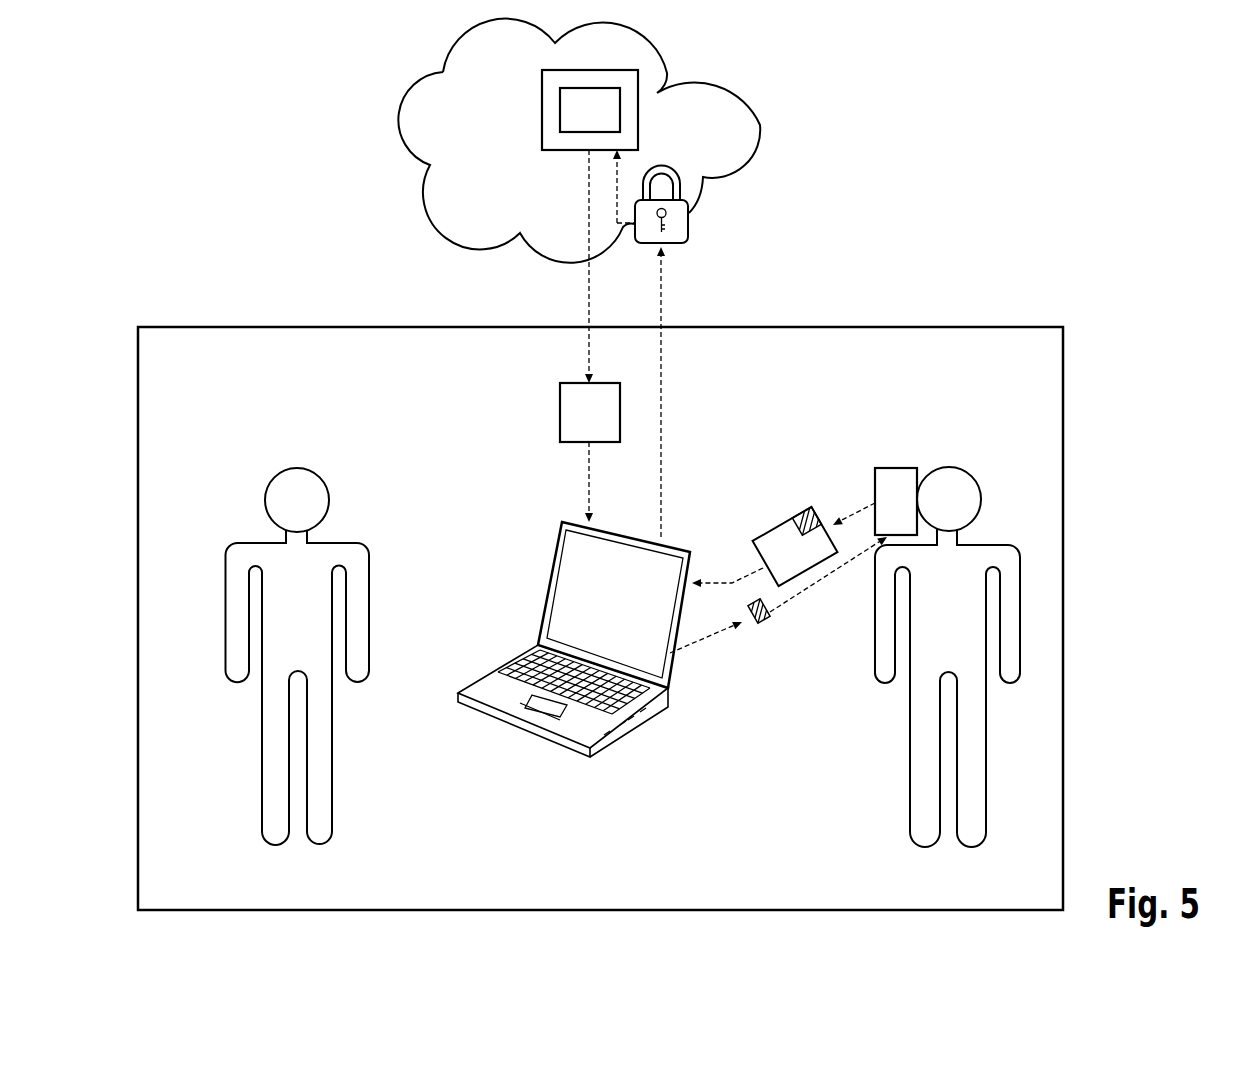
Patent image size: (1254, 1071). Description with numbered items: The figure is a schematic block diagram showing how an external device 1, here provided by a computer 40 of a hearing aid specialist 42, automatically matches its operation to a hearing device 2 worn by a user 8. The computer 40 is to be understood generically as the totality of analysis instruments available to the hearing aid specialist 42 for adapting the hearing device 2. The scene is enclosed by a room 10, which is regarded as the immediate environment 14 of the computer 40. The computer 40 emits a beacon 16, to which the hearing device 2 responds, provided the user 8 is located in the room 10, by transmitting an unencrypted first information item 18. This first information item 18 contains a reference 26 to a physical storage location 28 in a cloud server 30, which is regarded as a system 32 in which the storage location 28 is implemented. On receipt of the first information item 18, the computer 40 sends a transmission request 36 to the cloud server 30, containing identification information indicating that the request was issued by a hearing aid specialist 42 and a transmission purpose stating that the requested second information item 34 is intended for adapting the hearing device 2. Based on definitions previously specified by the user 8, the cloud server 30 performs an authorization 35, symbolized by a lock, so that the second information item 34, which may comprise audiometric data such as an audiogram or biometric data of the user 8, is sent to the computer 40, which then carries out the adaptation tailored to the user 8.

The external device 1 is at (574, 639).
The hearing device 2 is at (894, 468).
The user 8 is at (948, 467).
The room 10 is at (642, 618).
The immediate environment 14 is at (1015, 382).
The beacon 16 is at (757, 625).
The first information item 18 is at (795, 512).
The reference 26 is at (806, 521).
The storage location 28 is at (627, 82).
The cloud server 30 is at (645, 141).
The system 32 is at (758, 122).
The second information item 34 is at (607, 117).
The authorization 35 is at (688, 227).
The transmission request 36 is at (662, 303).
The computer 40 is at (482, 678).
The hearing aid specialist 42 is at (297, 468).